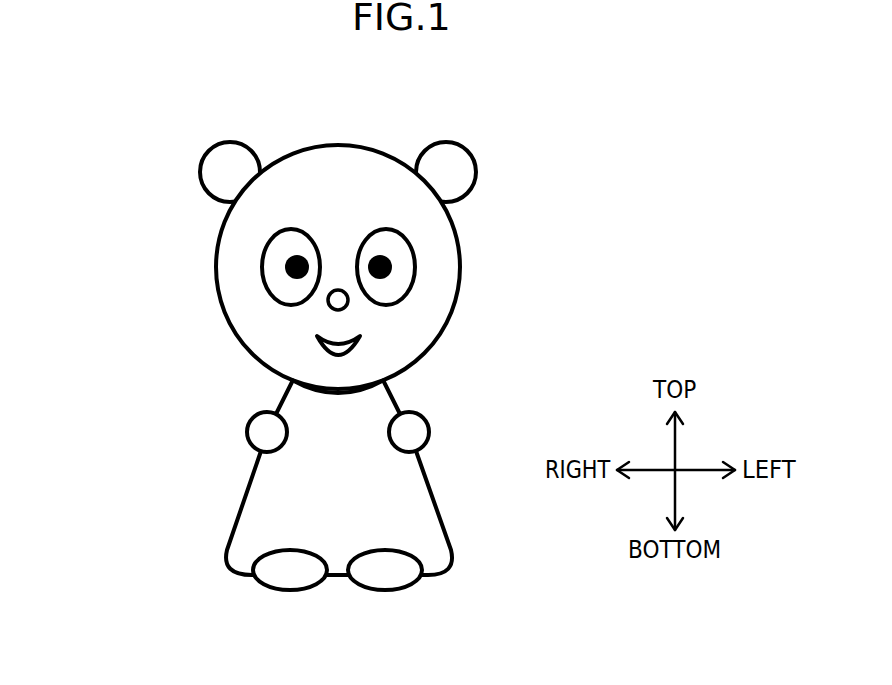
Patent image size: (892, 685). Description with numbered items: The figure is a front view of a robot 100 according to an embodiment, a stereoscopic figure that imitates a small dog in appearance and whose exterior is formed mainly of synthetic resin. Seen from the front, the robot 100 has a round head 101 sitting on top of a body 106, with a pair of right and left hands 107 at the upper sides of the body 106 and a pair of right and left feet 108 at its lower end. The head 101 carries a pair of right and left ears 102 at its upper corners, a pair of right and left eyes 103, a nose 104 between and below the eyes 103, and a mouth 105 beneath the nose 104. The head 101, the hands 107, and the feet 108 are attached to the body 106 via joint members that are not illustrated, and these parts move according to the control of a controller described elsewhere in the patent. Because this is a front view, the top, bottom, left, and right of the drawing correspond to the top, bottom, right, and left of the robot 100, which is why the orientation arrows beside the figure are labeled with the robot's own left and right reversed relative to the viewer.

The robot 100 is at (305, 346).
The head 101 is at (376, 269).
The ears 102 is at (338, 143).
The eyes 103 is at (336, 264).
The nose 104 is at (258, 308).
The mouth 105 is at (270, 352).
The body 106 is at (310, 478).
The hands 107 is at (340, 425).
The feet 108 is at (338, 584).